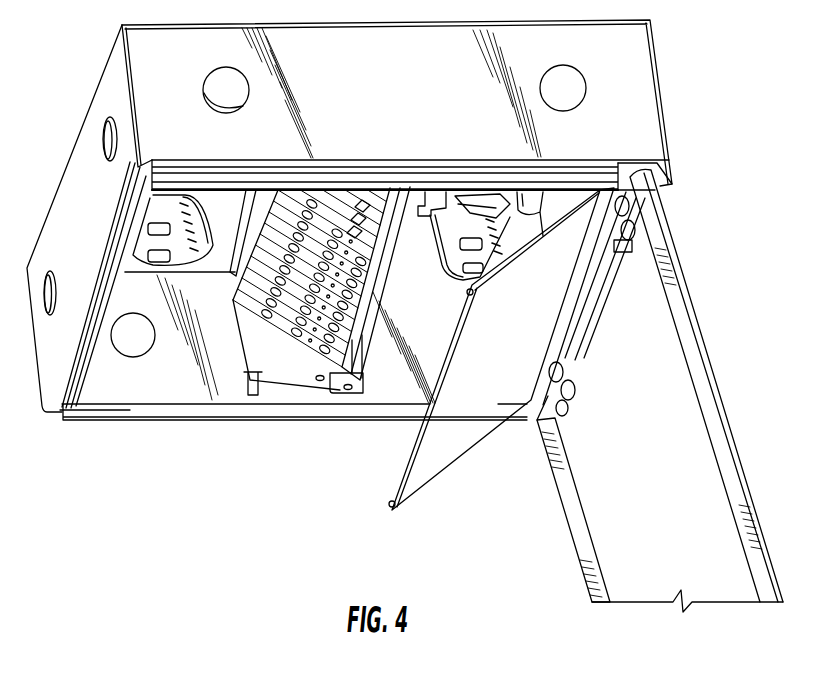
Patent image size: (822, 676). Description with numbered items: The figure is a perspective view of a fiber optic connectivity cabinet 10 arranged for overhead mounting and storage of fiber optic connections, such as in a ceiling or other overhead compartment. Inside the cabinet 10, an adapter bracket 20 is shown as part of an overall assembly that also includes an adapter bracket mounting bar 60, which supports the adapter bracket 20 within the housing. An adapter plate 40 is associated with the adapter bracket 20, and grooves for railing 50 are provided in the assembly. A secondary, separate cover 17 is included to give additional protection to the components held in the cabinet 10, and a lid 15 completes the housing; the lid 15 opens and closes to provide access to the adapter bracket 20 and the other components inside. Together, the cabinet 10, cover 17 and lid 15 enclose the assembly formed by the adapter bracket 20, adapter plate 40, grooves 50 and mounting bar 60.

The cabinet 10 is at (392, 106).
The lid 15 is at (655, 477).
The cover 17 is at (506, 358).
The adapter bracket 20 is at (322, 385).
The adapter plate 40 is at (252, 324).
The grooves for railing 50 is at (253, 388).
The adapter bracket mounting bar 60 is at (252, 352).